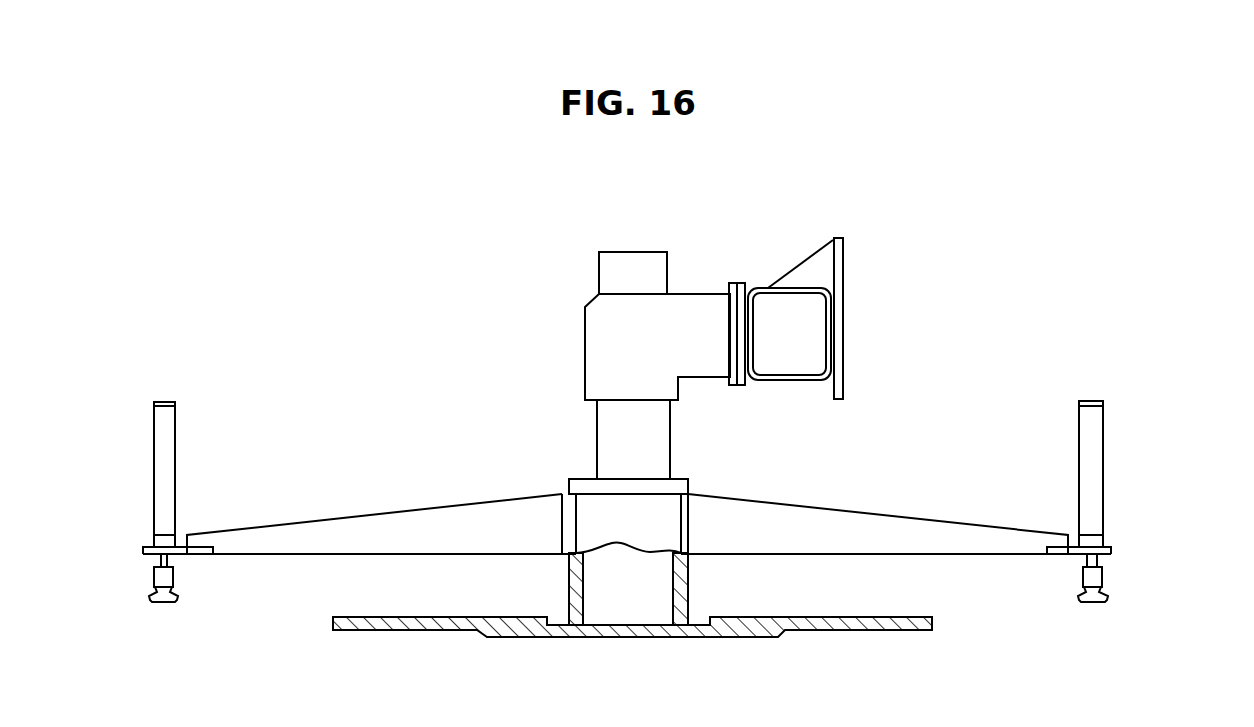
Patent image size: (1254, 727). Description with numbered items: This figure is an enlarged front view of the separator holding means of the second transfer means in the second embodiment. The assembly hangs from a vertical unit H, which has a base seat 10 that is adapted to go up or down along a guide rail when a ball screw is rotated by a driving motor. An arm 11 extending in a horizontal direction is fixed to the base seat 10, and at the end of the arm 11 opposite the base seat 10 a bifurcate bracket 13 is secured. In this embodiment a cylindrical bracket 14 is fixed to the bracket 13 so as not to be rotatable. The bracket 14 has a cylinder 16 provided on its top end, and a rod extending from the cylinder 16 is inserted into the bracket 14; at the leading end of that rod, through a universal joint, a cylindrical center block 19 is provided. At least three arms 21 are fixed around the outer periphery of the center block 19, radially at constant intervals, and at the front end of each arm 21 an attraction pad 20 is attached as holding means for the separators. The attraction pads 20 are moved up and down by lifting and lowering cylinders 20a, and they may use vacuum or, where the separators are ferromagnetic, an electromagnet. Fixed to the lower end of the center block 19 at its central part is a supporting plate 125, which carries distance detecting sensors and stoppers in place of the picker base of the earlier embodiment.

The base seat 10 is at (825, 250).
The vertical unit H is at (850, 266).
The arm 11 is at (765, 298).
The bifurcate bracket 13 is at (685, 312).
The cylindrical bracket 14 is at (663, 438).
The cylinder 16 is at (619, 260).
The center block 19 is at (585, 478).
The attraction pad 20 is at (163, 605).
The lifting and lowering cylinder 20a is at (168, 438).
The arm 21 is at (355, 523).
The supporting plate 125 is at (613, 633).